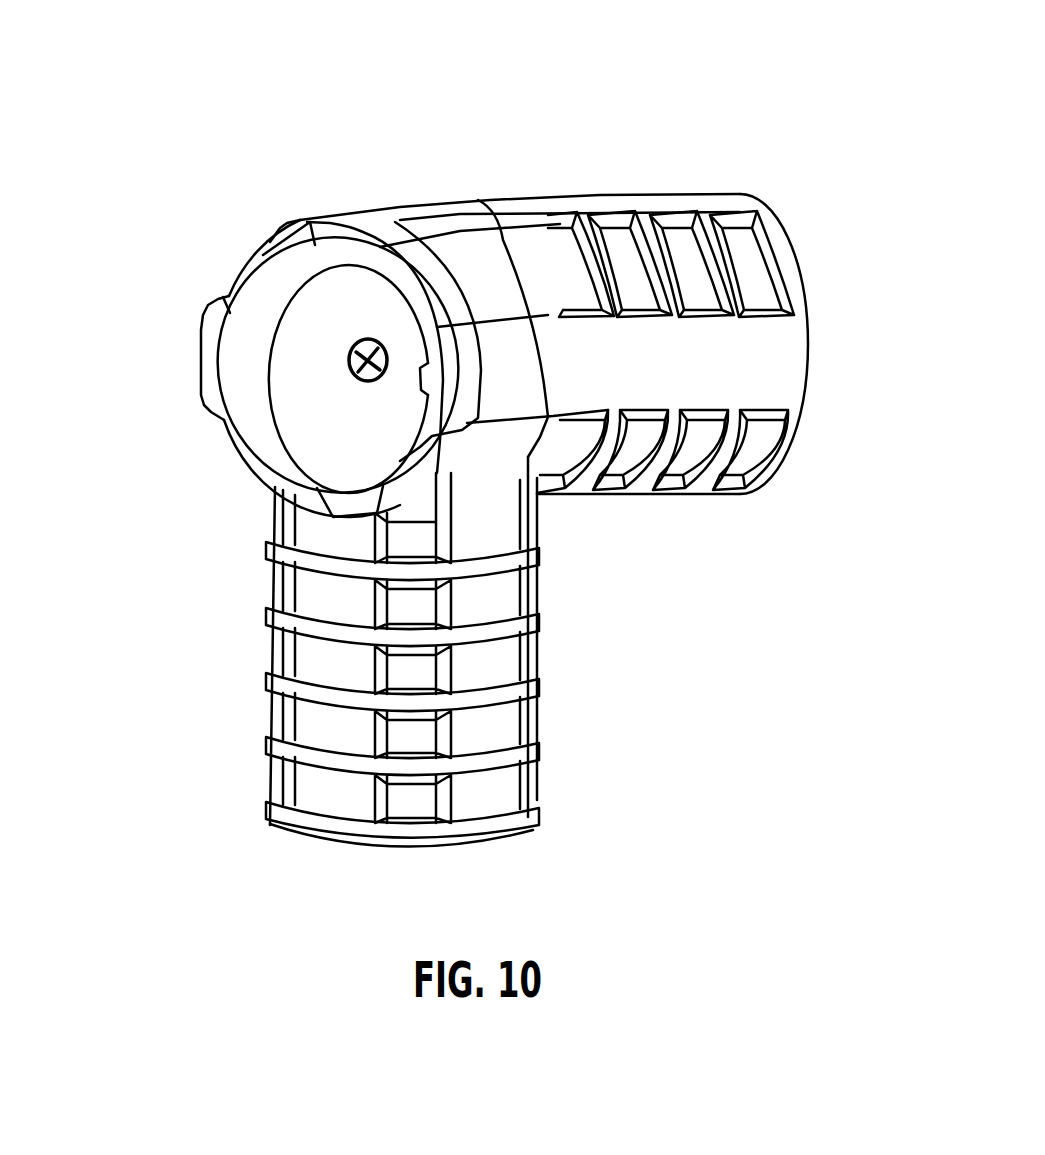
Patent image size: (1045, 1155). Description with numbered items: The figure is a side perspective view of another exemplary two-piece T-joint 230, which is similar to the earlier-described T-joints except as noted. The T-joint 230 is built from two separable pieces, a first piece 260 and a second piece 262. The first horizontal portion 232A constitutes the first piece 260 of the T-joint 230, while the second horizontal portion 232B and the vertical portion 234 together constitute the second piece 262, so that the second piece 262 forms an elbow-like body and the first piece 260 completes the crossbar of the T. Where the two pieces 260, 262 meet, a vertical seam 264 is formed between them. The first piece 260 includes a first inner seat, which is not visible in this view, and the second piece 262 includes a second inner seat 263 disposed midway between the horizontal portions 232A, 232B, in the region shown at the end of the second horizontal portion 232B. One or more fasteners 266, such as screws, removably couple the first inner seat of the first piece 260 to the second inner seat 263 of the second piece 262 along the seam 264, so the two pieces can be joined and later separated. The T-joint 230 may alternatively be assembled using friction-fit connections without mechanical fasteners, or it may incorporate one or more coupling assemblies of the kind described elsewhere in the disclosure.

The two-piece T-joint 230 is at (243, 126).
The first horizontal portion 232A is at (777, 372).
The second horizontal portion 232B is at (245, 270).
The vertical portion 234 is at (507, 798).
The first piece 260 is at (700, 190).
The second piece 262 is at (193, 338).
The second inner seat 263 is at (318, 367).
The vertical seam 264 is at (528, 292).
The fastener 266 is at (370, 340).